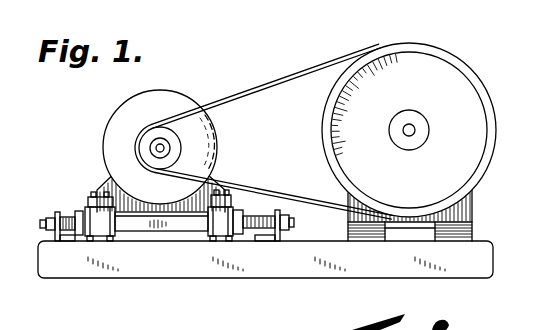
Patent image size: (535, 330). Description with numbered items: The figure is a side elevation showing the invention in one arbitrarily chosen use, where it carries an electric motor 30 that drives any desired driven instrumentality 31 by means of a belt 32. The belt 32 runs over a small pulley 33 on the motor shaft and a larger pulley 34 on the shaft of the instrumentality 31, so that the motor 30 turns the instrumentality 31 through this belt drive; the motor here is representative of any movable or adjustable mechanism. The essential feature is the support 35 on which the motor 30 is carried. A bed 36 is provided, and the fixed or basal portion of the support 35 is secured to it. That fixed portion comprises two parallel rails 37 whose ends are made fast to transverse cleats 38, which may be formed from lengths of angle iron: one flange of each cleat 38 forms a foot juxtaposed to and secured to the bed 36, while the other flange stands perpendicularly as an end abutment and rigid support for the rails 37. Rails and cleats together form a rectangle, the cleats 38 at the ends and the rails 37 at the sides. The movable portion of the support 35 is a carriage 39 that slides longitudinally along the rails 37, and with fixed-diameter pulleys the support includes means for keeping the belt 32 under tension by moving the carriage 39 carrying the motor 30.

The electric motor 30 is at (112, 124).
The driven instrumentality 31 is at (470, 212).
The belt 32 is at (283, 80).
The pulley 33 is at (183, 155).
The pulley 34 is at (323, 127).
The support 35 is at (64, 214).
The bed 36 is at (42, 255).
The rails 37 is at (251, 214).
The transverse cleats 38 is at (48, 231).
The carriage 39 is at (170, 238).